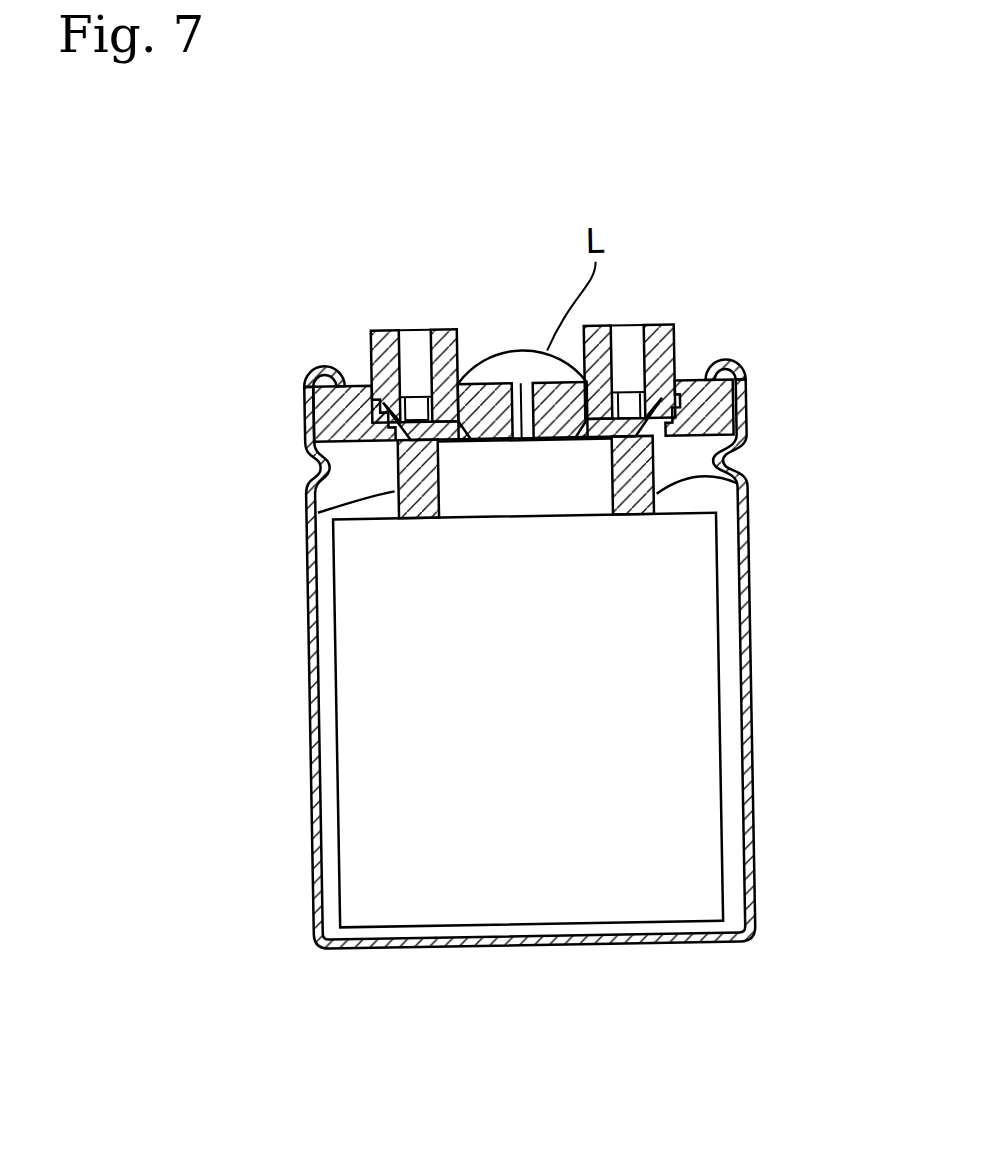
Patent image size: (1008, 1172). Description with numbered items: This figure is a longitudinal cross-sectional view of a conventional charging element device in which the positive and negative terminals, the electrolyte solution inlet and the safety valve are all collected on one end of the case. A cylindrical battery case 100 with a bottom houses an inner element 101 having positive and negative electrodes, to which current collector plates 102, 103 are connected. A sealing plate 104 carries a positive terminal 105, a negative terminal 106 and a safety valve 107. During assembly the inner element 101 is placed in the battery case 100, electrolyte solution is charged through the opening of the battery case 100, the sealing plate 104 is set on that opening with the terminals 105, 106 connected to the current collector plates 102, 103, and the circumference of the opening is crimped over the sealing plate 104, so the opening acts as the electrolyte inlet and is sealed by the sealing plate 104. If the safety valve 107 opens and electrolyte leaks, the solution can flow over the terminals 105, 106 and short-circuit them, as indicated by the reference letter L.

The battery case 100 is at (746, 603).
The inner element 101 is at (714, 706).
The current collector plate 102 is at (313, 510).
The current collector plate 103 is at (746, 498).
The sealing plate 104 is at (697, 372).
The positive terminal 105 is at (380, 323).
The negative terminal 106 is at (660, 328).
The safety valve 107 is at (515, 385).